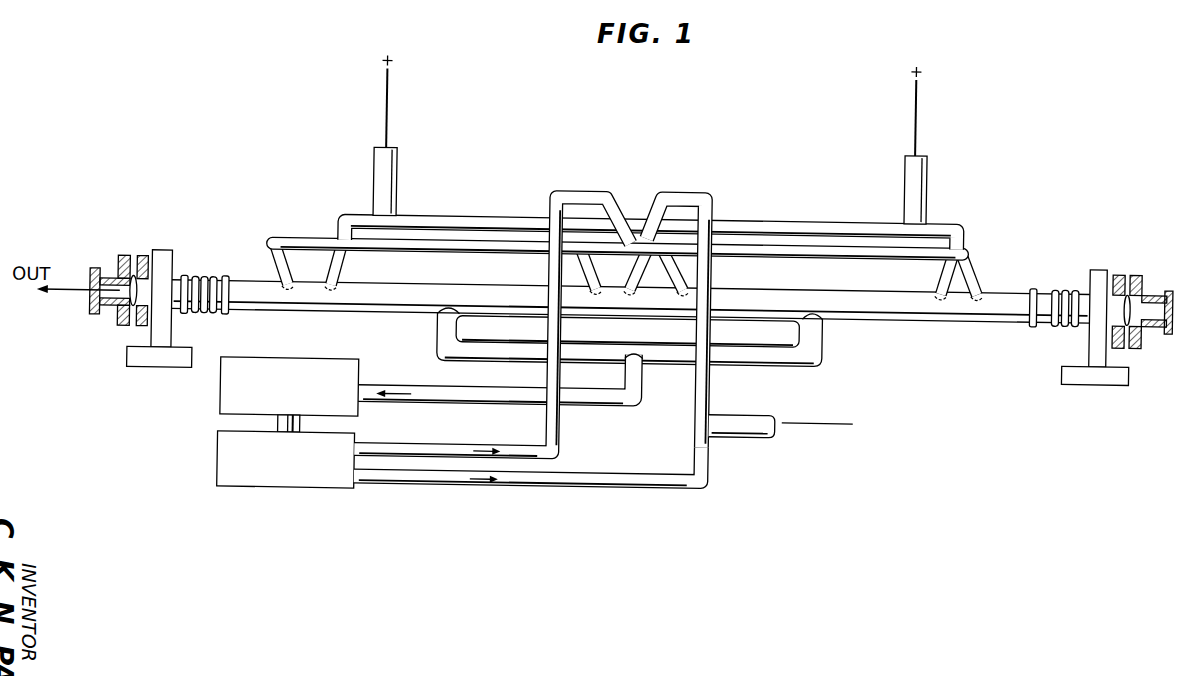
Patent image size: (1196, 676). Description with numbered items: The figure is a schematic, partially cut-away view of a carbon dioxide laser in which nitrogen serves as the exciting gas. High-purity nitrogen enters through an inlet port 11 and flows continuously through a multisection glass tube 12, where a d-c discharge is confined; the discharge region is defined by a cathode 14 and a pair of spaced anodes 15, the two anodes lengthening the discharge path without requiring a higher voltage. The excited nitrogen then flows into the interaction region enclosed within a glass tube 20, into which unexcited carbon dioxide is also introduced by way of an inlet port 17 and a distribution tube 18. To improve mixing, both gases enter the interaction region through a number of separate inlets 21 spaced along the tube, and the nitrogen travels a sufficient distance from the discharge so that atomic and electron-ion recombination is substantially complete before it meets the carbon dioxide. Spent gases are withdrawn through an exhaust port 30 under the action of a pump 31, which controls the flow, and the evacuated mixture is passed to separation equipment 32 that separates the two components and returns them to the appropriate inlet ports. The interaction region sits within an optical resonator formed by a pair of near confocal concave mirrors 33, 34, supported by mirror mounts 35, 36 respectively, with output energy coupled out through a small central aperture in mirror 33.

The inlet port 11 is at (411, 483).
The multisection glass tube 12 is at (476, 210).
The cathode 14 is at (751, 430).
The anodes 15 is at (396, 166).
The inlet port 17 is at (563, 434).
The distribution tube 18 is at (306, 236).
The glass tube 20 is at (915, 310).
The inlets 21 is at (273, 236).
The exhaust port 30 is at (396, 380).
The pump 31 is at (298, 357).
The separation equipment 32 is at (289, 487).
The concave mirror 33 is at (143, 257).
The concave mirror 34 is at (1137, 261).
The mirror mount 35 is at (124, 257).
The mirror mount 36 is at (1142, 268).